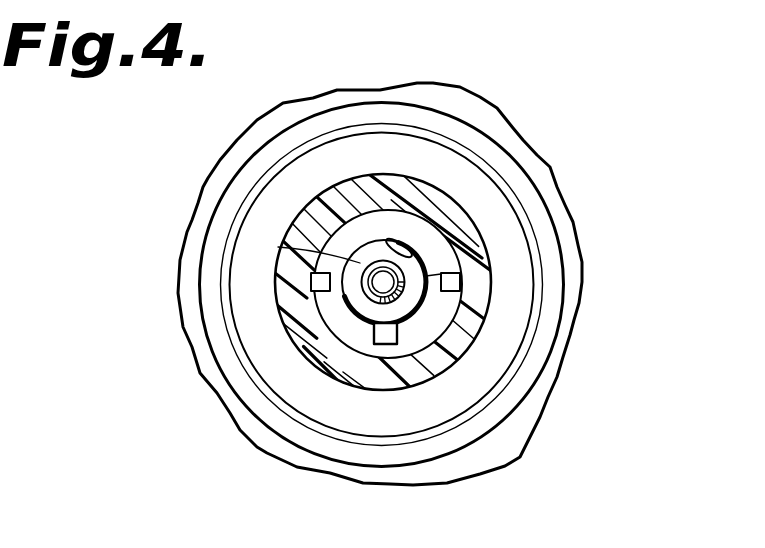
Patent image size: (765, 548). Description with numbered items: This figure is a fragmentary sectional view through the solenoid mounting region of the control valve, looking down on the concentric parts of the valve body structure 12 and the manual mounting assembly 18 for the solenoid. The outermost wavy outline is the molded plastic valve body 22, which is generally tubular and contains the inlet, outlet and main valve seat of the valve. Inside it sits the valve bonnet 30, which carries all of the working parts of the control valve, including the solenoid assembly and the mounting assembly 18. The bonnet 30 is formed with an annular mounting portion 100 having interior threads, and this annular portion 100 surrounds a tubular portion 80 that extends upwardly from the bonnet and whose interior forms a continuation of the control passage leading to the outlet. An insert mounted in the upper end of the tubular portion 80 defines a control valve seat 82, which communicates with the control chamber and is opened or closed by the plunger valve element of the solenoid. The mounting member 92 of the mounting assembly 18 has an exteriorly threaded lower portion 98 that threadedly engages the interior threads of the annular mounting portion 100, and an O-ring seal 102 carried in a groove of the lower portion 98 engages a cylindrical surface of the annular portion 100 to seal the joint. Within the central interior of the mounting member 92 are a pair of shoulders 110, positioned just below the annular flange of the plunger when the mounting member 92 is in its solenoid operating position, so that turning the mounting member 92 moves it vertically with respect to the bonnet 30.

The valve body structure 12 is at (190, 185).
The manual mounting assembly 18 is at (484, 224).
The valve body 22 is at (473, 455).
The valve bonnet 30 is at (528, 143).
The tubular portion 80 is at (312, 280).
The control valve seat 82 is at (368, 294).
The mounting member 92 is at (478, 304).
The lower portion 98 is at (500, 360).
The annular mounting portion 100 is at (263, 403).
The O-ring seal 102 is at (542, 260).
The shoulders 110 is at (358, 263).